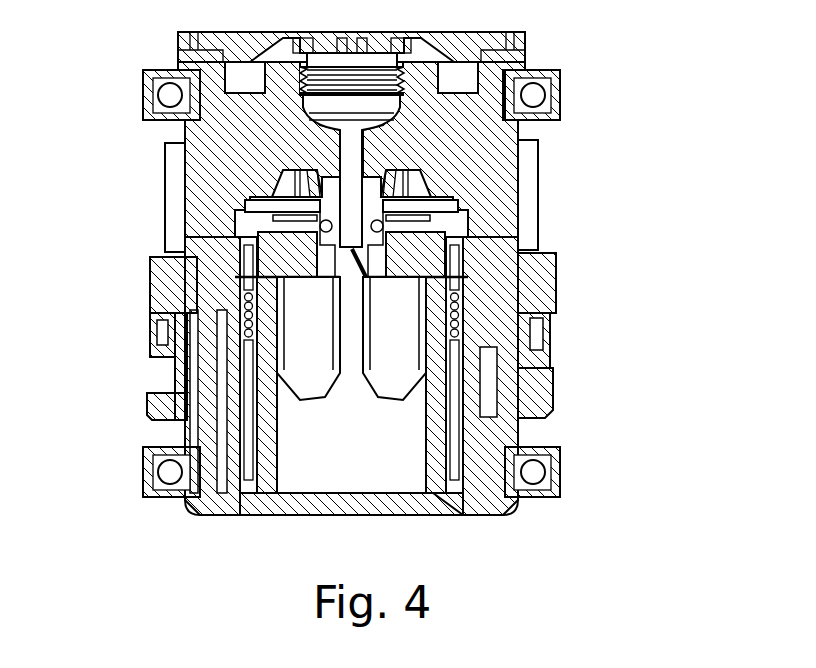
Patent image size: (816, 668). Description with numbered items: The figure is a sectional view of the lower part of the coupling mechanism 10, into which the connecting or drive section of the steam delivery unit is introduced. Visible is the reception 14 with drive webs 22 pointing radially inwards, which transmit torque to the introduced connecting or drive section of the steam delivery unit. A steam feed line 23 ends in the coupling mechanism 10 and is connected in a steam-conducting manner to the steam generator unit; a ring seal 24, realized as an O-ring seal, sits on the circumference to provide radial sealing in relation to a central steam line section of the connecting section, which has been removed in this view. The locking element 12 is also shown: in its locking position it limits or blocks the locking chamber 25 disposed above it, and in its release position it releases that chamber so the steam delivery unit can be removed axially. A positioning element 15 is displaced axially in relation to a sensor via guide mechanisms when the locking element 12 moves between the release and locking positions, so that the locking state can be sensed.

The coupling mechanism 10 is at (602, 312).
The locking element 12 is at (533, 283).
The reception 14 is at (287, 470).
The positioning element 15 is at (545, 385).
The drive web 22 is at (288, 342).
The steam feed line 23 is at (350, 185).
The ring seal 24 is at (245, 265).
The locking chamber 25 is at (290, 183).